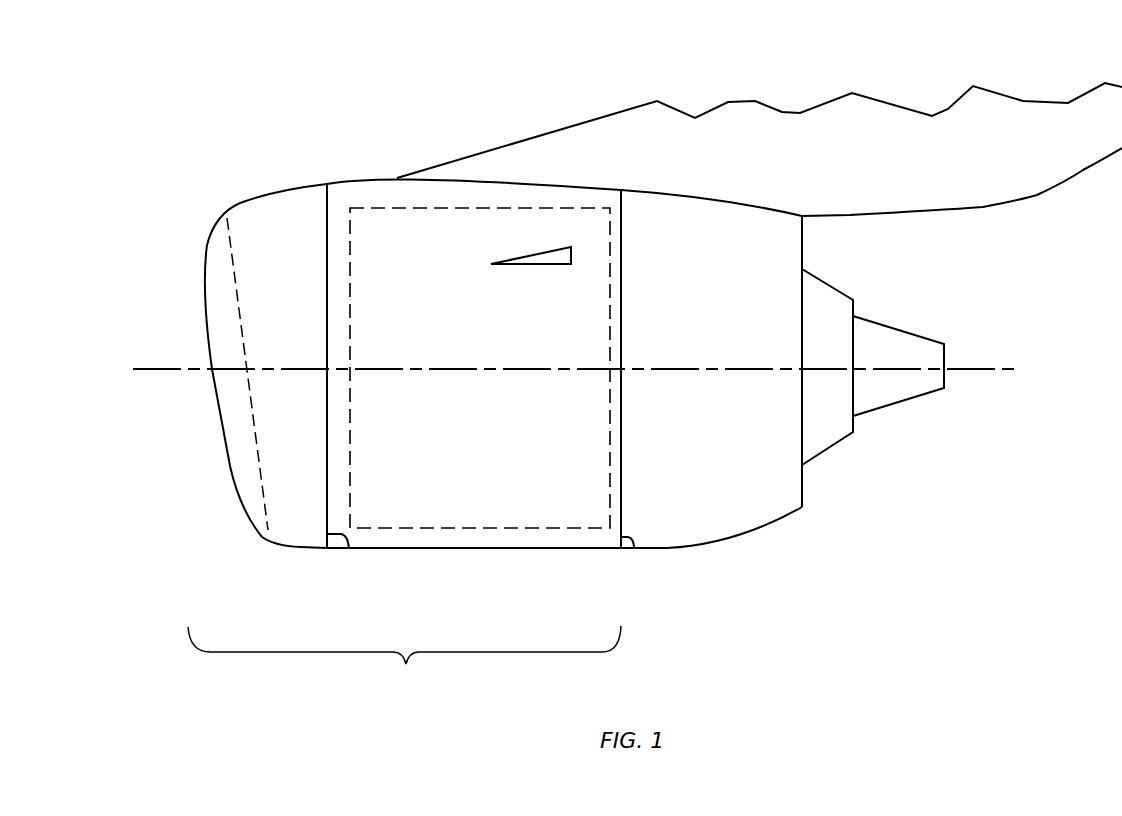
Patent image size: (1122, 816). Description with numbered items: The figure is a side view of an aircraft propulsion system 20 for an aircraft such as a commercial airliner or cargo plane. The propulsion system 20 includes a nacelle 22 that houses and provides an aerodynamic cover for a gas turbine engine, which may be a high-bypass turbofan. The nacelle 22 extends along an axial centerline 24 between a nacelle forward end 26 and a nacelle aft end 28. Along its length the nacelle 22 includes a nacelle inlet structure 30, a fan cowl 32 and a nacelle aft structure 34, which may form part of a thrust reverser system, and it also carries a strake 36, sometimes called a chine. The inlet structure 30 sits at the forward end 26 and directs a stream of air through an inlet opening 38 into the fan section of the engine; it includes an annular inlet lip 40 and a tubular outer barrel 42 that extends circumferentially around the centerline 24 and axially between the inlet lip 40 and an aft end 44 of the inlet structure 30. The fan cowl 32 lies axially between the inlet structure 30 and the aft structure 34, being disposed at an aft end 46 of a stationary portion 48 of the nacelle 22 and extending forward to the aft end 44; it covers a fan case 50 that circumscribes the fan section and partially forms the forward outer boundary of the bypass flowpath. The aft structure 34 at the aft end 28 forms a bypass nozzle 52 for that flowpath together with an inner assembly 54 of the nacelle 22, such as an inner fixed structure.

The aircraft propulsion system 20 is at (201, 118).
The nacelle 22 is at (312, 172).
The axial centerline 24 is at (147, 372).
The nacelle forward end 26 is at (203, 288).
The nacelle aft end 28 is at (803, 240).
The nacelle inlet structure 30 is at (288, 548).
The fan cowl 32 is at (443, 549).
The nacelle aft structure 34 is at (665, 549).
The strake 36 is at (534, 248).
The inlet opening 38 is at (230, 466).
The annular inlet lip 40 is at (250, 530).
The tubular outer barrel 42 is at (301, 549).
The aft end of the inlet structure 44 is at (349, 550).
The aft end of the stationary portion 46 is at (630, 549).
The stationary portion 48 is at (404, 661).
The fan case 50 is at (540, 529).
The bypass nozzle 52 is at (803, 490).
The inner assembly 54 is at (840, 443).